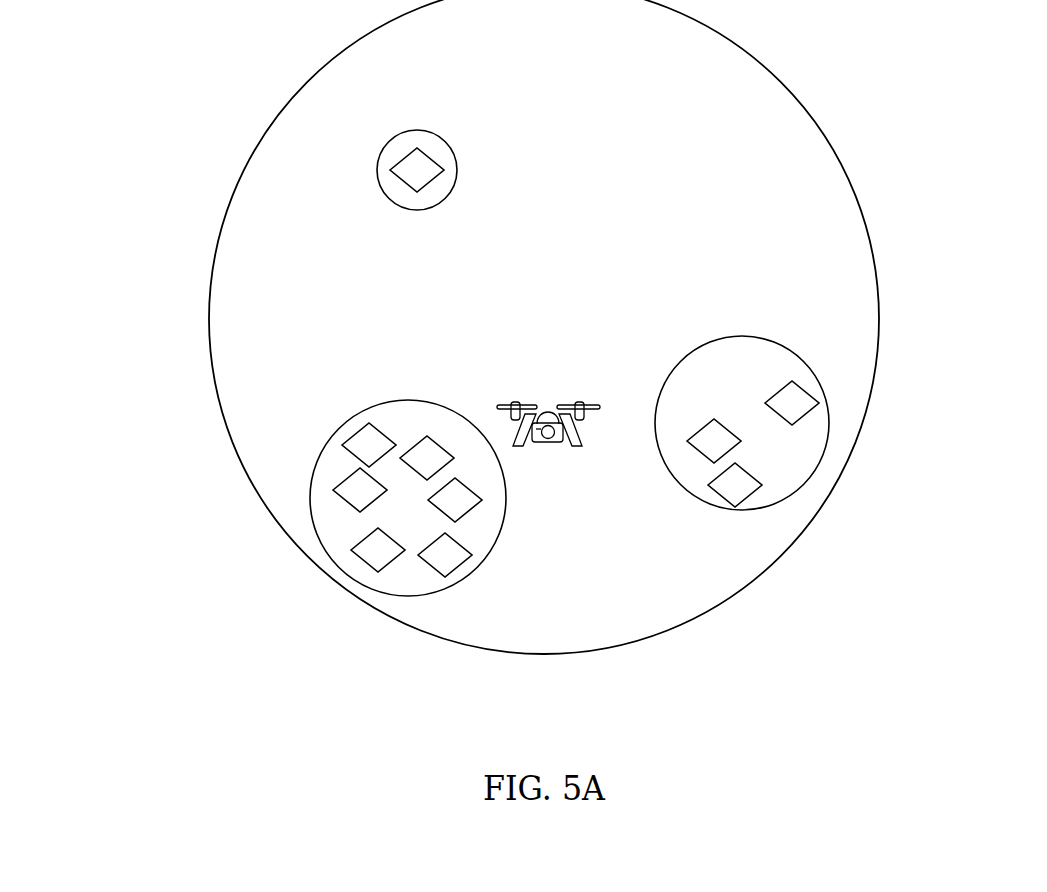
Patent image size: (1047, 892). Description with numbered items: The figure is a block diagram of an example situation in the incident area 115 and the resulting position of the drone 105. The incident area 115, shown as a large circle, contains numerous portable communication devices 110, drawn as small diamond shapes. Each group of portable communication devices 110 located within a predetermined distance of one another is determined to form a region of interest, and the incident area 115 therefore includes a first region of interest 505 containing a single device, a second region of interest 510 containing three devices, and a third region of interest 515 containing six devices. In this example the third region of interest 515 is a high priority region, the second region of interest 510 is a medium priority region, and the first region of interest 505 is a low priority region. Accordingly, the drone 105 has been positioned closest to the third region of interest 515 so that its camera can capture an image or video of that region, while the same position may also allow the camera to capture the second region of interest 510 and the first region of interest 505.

The drone 105 is at (548, 411).
The portable communication devices 110 is at (432, 161).
The incident area 115 is at (247, 163).
The first region of interest 505 is at (413, 211).
The second region of interest 510 is at (810, 482).
The third region of interest 515 is at (327, 563).